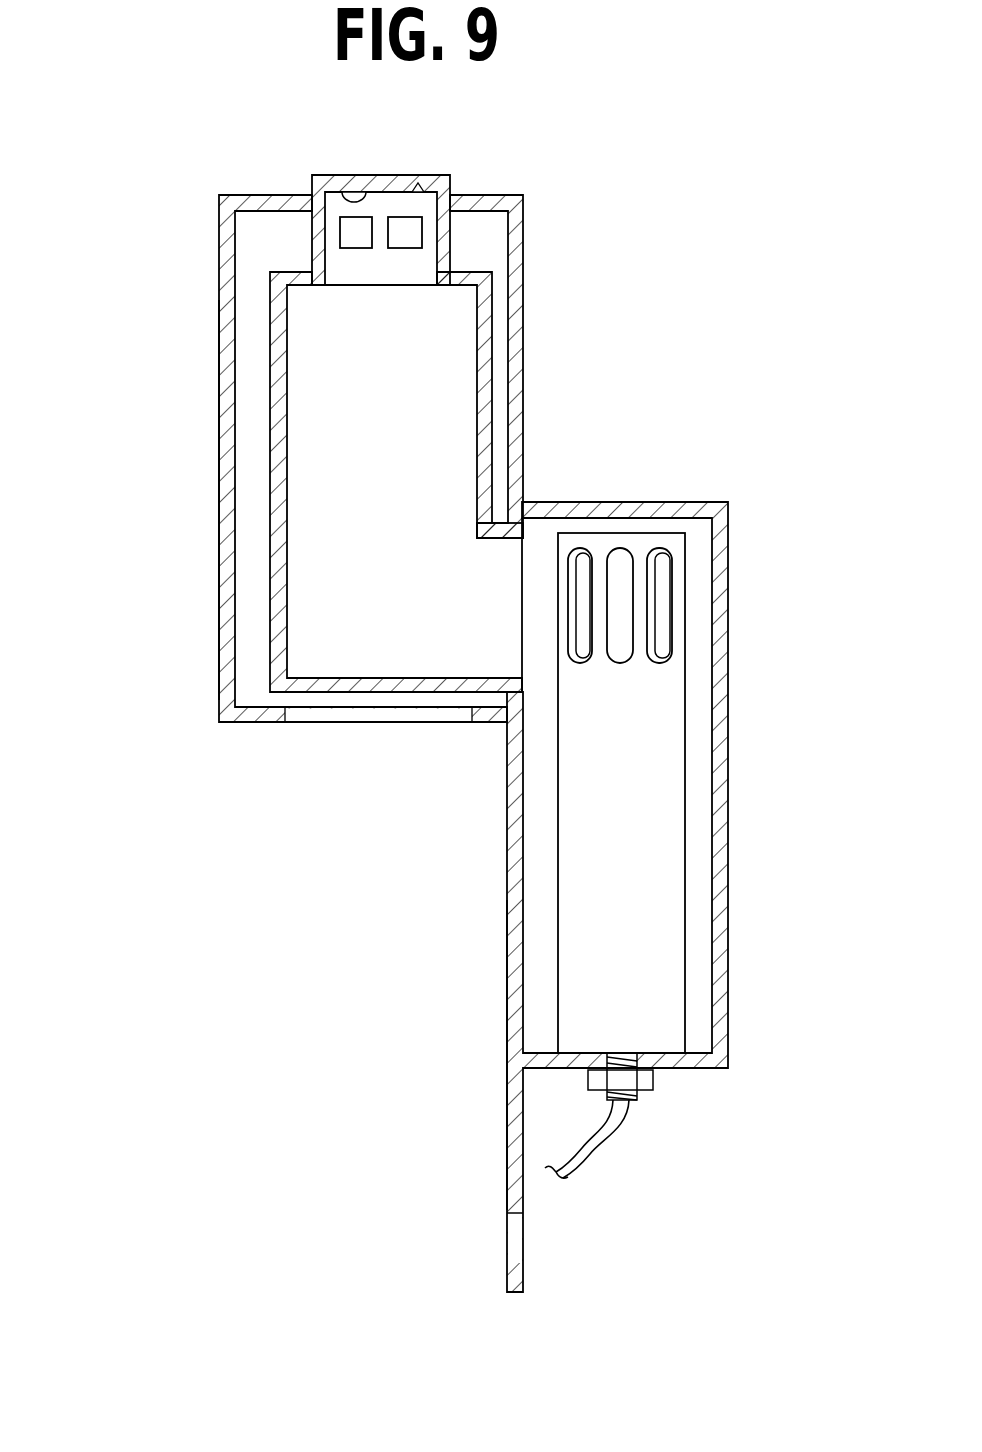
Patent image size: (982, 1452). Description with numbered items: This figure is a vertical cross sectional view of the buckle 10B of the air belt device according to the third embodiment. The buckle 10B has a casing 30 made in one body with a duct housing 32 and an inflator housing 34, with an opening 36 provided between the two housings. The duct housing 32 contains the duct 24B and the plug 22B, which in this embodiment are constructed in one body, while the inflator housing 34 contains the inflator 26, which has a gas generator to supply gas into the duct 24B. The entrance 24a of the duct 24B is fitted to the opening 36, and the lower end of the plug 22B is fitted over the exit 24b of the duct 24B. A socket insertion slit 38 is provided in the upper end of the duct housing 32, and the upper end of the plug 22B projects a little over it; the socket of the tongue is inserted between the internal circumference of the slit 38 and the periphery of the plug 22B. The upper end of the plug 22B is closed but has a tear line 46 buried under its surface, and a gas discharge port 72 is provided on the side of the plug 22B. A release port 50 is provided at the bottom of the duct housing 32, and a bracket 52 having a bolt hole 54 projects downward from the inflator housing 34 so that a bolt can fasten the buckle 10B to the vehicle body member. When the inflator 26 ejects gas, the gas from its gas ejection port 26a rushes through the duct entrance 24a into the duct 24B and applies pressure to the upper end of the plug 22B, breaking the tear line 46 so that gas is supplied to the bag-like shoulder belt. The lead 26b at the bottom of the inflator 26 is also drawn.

The buckle 10B is at (601, 355).
The plug 22B is at (445, 180).
The duct 24B is at (270, 505).
The entrance of the duct 24a is at (505, 613).
The exit of the duct 24b is at (387, 270).
The inflator 26 is at (645, 885).
The gas ejection port of the inflator 26a is at (657, 615).
The cable 26b is at (598, 1140).
The casing 30 is at (203, 302).
The duct housing 32 is at (217, 650).
The inflator housing 34 is at (517, 1035).
The opening 36 is at (512, 492).
The socket insertion slit 38 is at (293, 195).
The tear line 46 is at (378, 182).
The release port 50 is at (357, 722).
The bracket 52 is at (512, 1198).
The bolt hole 54 is at (512, 1253).
The gas discharge port 72 is at (317, 235).